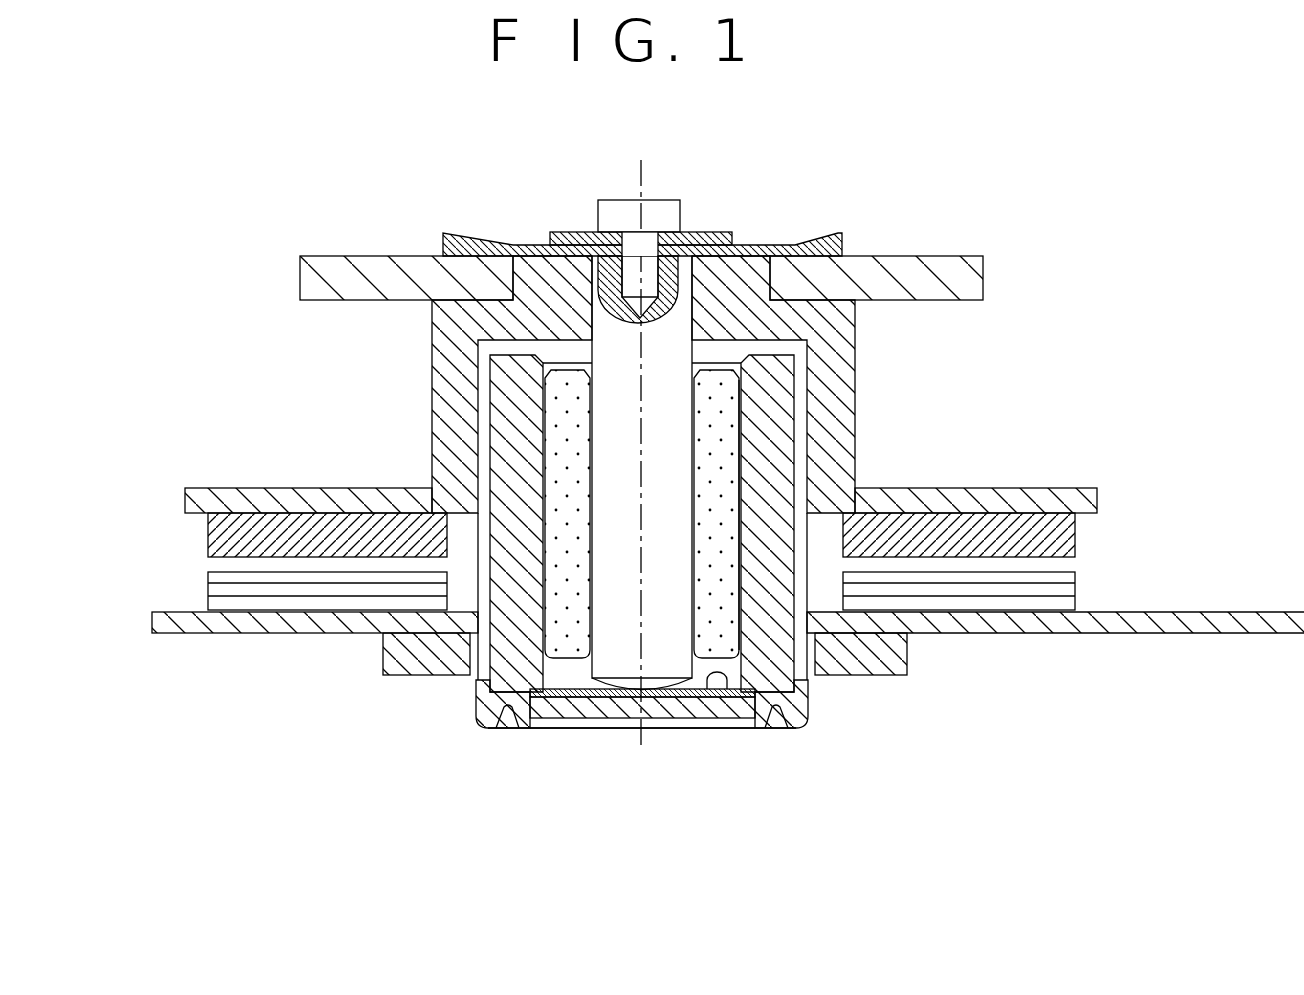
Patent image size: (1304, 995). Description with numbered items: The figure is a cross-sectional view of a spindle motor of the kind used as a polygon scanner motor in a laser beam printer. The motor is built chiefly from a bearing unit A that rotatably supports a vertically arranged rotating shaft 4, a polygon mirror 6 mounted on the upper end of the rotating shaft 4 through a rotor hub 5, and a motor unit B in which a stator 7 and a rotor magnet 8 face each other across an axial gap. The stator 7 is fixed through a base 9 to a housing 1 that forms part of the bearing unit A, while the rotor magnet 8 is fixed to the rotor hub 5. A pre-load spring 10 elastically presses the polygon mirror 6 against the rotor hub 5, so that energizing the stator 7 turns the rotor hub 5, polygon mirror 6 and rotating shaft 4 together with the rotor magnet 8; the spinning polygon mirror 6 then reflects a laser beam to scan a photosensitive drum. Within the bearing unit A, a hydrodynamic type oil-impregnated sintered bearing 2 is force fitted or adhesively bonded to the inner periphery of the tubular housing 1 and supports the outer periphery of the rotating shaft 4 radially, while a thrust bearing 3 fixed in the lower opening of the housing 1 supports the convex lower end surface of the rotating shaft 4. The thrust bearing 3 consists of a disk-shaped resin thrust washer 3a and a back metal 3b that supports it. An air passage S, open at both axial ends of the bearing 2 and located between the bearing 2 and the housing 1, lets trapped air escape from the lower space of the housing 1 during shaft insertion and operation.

The housing 1 is at (510, 638).
The hydrodynamic type oil-impregnated sintered bearing 2 is at (713, 623).
The thrust bearing 3 is at (577, 719).
The resin thrust washer 3a is at (720, 673).
The back metal 3b is at (650, 707).
The rotating shaft 4 is at (673, 333).
The rotor hub 5 is at (437, 377).
The polygon mirror 6 is at (362, 263).
The stator 7 is at (208, 584).
The rotor magnet 8 is at (208, 528).
The base 9 is at (180, 633).
The pre-load spring 10 is at (462, 238).
The air passage S is at (745, 447).
The bearing unit A is at (500, 745).
The motor unit B is at (138, 517).